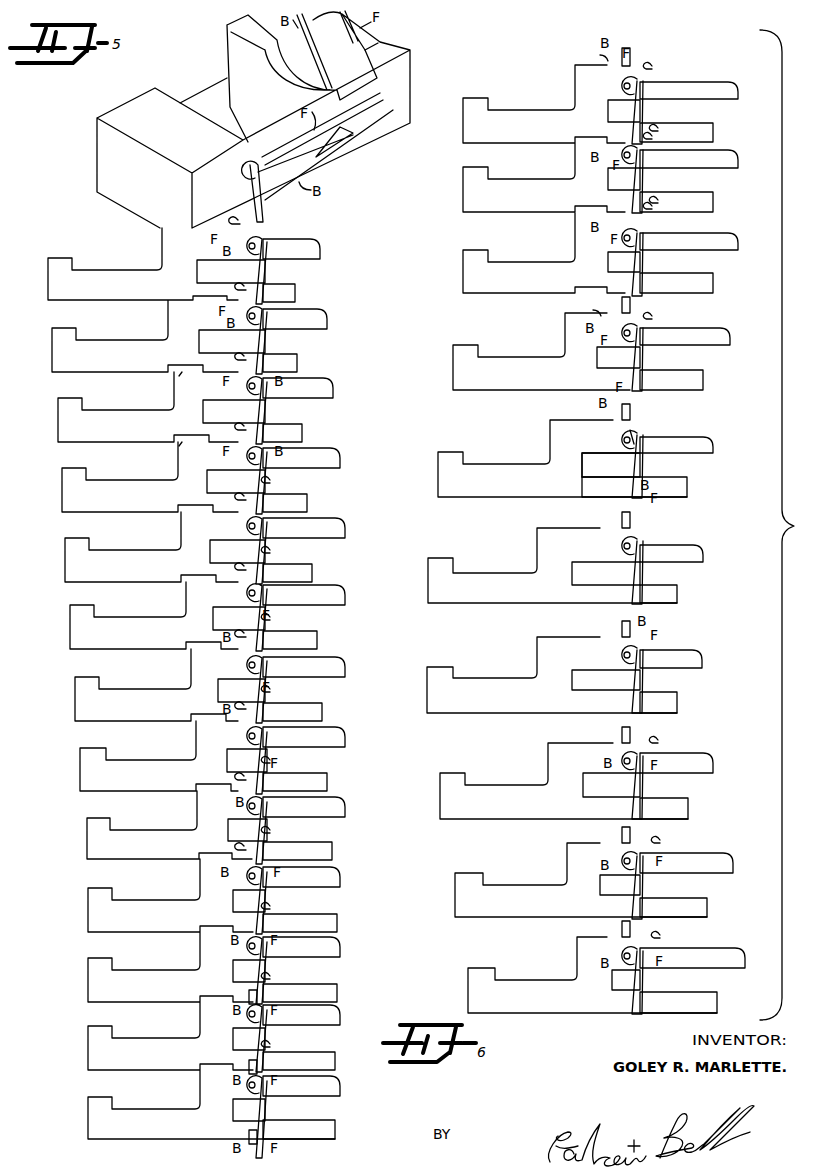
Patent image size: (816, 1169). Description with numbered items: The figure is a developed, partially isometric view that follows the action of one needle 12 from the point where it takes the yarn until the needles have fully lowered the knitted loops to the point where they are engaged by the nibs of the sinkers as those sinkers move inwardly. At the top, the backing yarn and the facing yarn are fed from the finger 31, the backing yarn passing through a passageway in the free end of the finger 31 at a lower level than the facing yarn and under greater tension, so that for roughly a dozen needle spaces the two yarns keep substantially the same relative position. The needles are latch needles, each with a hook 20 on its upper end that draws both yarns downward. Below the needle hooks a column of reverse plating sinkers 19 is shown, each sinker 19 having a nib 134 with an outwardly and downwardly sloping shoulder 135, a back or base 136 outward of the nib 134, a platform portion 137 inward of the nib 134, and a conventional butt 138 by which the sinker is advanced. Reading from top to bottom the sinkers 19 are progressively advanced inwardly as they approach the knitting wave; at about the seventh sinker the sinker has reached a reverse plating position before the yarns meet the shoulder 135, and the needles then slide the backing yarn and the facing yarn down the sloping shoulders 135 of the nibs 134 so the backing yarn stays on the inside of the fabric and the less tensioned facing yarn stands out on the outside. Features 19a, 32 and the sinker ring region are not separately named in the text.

In FIG. 6, the needle 12 is at (645, 438).
In FIG. 5, the reverse plating sinker 19 is at (328, 250).
In FIG. 6, the reverse plating sinker 19 is at (739, 87).
In FIG. 5, the slat section 19a is at (297, 293).
In FIG. 6, the slat section 19a is at (713, 130).
In FIG. 5, the hook 20 is at (246, 156).
In FIG. 6, the hook 20 is at (644, 88).
In FIG. 5, the finger 31 is at (228, 60).
In FIG. 5, the guide 32 is at (380, 40).
In FIG. 5, the nib 134 is at (236, 216).
In FIG. 6, the nib 134 is at (688, 56).
In FIG. 5, the sloping shoulder 135 is at (224, 222).
In FIG. 6, the sloping shoulder 135 is at (638, 38).
In FIG. 5, the back or base 136 is at (196, 218).
In FIG. 6, the back or base 136 is at (614, 58).
In FIG. 5, the platform portion 137 is at (272, 484).
In FIG. 6, the platform portion 137 is at (668, 66).
In FIG. 5, the butt 138 is at (68, 257).
In FIG. 6, the butt 138 is at (466, 97).